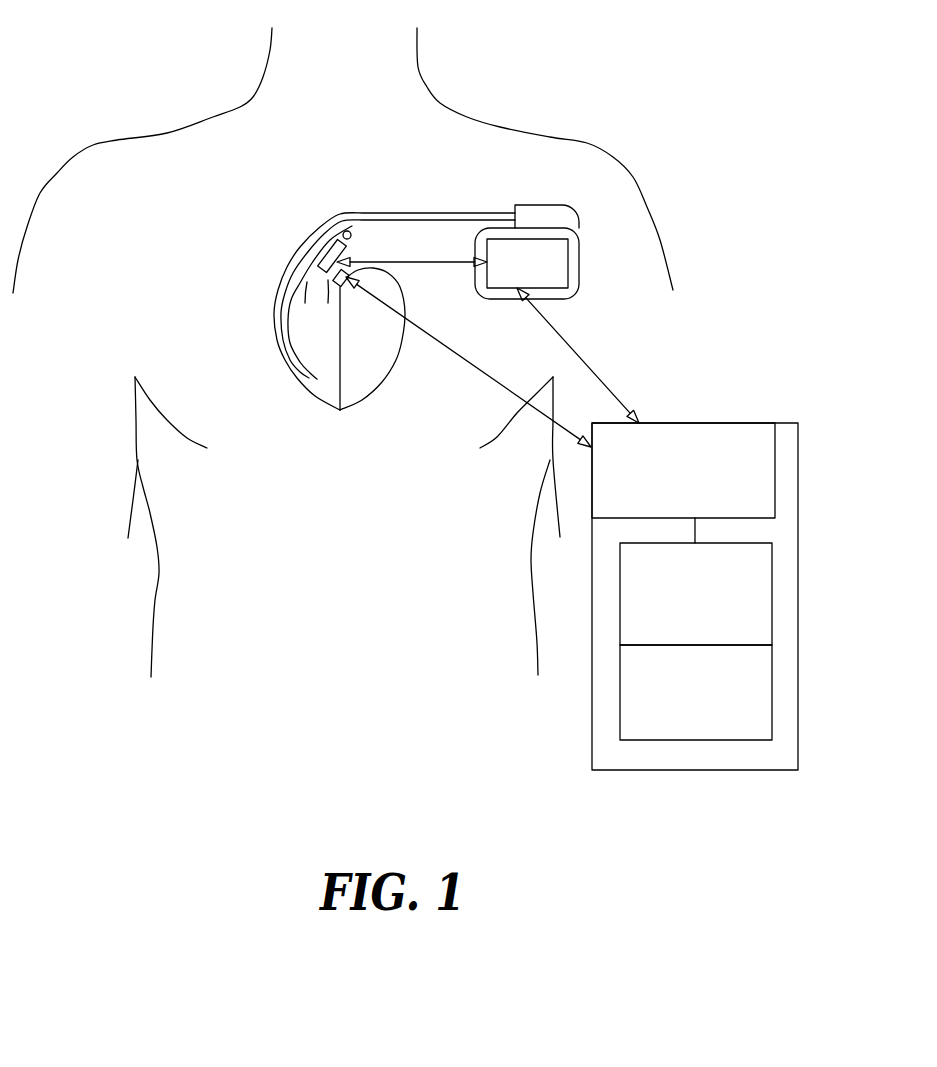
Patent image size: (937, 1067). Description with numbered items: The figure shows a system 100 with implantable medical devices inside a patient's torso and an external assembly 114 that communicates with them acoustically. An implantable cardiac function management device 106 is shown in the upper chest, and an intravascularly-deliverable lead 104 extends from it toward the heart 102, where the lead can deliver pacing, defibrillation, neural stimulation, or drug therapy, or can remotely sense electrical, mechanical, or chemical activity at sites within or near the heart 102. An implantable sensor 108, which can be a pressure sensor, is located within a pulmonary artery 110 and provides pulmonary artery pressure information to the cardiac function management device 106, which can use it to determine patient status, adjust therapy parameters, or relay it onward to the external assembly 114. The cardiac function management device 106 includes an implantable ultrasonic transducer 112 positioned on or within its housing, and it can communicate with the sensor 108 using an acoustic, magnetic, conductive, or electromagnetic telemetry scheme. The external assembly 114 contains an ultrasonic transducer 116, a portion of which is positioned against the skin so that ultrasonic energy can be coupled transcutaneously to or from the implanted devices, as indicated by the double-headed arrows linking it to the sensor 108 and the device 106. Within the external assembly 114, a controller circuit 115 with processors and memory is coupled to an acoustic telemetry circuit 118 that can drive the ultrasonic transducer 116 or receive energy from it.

The system 100 is at (607, 77).
The heart 102 is at (370, 387).
The intravascularly-deliverable lead 104 is at (298, 262).
The implantable cardiac function management device 106 is at (580, 268).
The implantable sensor 108 is at (333, 252).
The pulmonary artery 110 is at (352, 236).
The implantable ultrasonic transducer 112 is at (568, 250).
The external assembly 114 is at (685, 770).
The controller circuit 115 is at (620, 668).
The ultrasonic transducer 116 is at (623, 520).
The acoustic telemetry circuit 118 is at (620, 598).